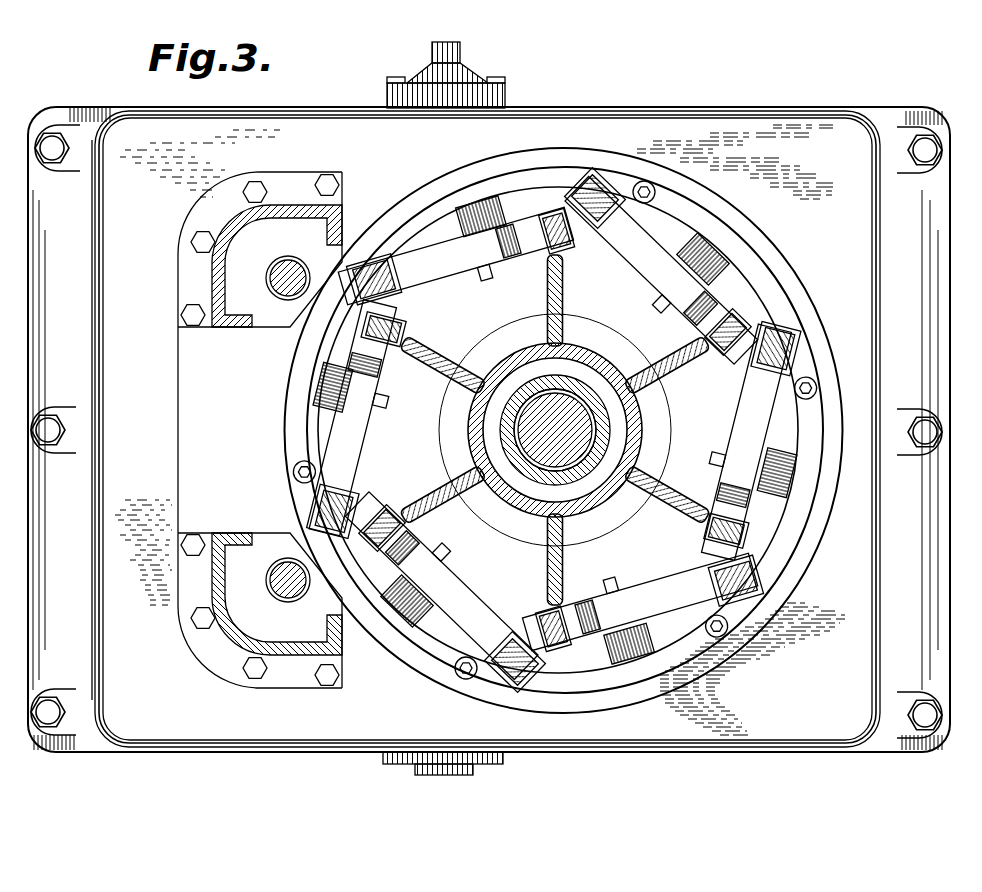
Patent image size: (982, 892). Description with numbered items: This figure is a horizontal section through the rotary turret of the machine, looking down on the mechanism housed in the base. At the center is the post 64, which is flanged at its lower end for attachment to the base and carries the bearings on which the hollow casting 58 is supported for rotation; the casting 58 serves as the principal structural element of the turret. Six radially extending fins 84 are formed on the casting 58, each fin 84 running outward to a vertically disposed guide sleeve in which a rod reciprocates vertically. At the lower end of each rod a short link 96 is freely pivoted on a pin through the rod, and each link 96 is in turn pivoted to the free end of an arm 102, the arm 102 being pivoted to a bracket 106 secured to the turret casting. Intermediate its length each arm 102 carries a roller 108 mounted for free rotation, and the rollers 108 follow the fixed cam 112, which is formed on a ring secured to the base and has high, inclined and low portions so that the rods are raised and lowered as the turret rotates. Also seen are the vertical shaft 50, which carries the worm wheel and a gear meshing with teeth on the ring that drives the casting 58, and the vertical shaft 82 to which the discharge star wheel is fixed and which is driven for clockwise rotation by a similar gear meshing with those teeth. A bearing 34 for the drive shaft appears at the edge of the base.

The bearing 34 is at (505, 97).
The vertical shaft 50 is at (287, 578).
The hollow casting 58 is at (510, 495).
The post 64 is at (572, 426).
The vertical shaft 82 is at (288, 266).
The fin 84 is at (563, 302).
The link 96 is at (731, 345).
The arm 102 is at (355, 450).
The bracket 106 is at (592, 195).
The roller 108 is at (705, 258).
The cam 112 is at (748, 293).